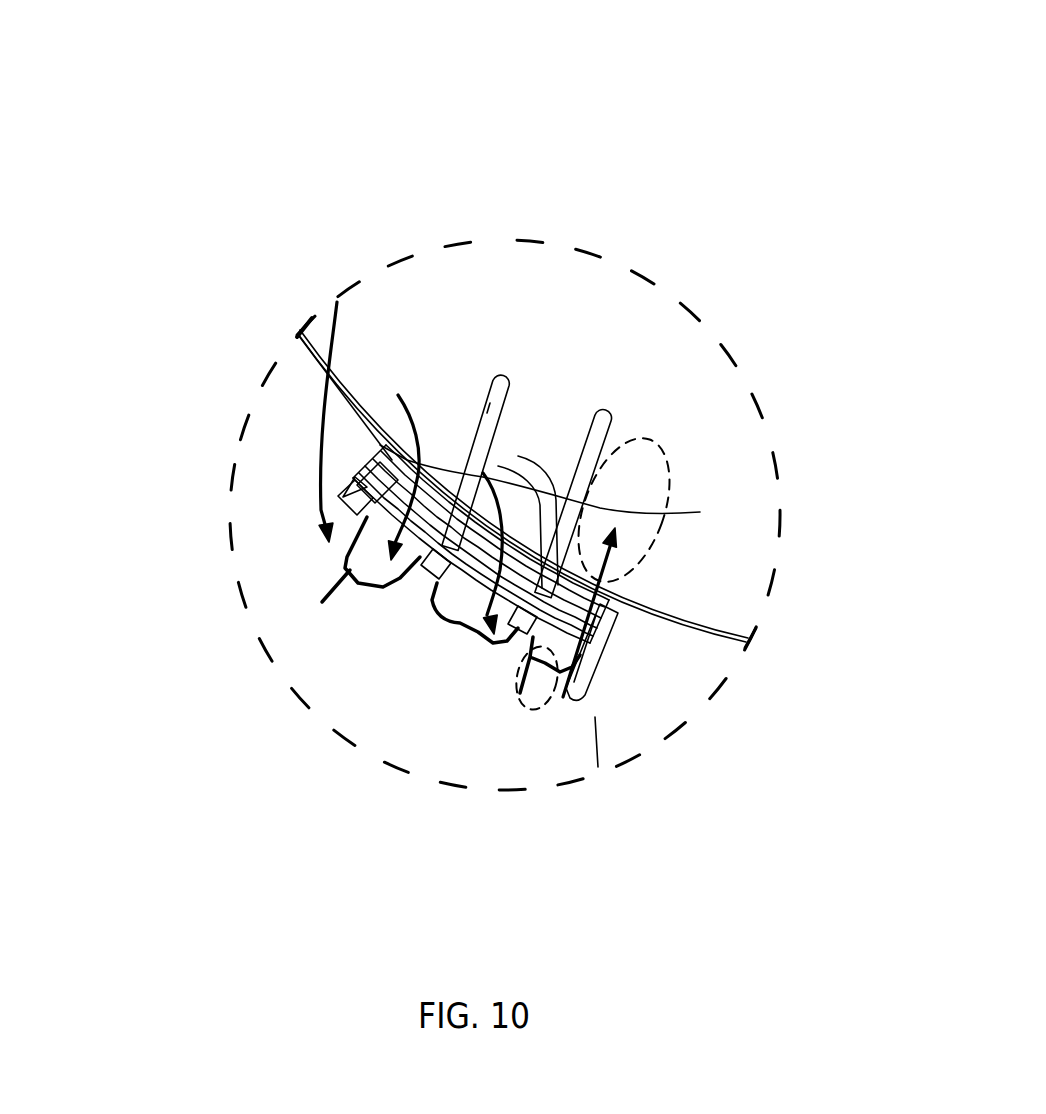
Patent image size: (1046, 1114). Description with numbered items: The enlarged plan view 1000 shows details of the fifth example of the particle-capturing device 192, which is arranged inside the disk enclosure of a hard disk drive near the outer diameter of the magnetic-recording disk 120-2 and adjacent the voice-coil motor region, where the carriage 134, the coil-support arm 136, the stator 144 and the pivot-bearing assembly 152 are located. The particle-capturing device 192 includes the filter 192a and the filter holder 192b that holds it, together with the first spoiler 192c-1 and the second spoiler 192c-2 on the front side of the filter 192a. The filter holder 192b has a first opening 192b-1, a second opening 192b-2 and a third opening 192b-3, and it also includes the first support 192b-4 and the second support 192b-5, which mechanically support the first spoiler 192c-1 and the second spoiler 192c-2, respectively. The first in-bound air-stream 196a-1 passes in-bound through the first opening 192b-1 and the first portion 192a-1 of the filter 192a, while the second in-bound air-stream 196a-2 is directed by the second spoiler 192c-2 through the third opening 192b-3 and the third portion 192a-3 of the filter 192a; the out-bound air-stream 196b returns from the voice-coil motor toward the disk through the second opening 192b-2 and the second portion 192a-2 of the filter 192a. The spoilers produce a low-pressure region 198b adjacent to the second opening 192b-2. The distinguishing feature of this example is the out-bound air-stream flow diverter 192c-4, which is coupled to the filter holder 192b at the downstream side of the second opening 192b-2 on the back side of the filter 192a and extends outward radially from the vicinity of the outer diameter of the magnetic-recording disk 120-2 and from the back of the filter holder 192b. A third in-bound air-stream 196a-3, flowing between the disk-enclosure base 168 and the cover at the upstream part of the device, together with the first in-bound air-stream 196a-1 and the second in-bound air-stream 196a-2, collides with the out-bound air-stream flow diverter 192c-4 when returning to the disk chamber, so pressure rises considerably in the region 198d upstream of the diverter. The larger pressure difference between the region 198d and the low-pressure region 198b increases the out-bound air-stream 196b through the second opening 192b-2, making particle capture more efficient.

The enlarged plan view 1000 is at (114, 84).
The disk-enclosure base 168 is at (294, 362).
The particle-capturing device 192 is at (110, 893).
The first spoiler 192c-1 is at (525, 427).
The second spoiler 192c-2 is at (600, 500).
The second support 192b-5 is at (380, 445).
The first support 192b-4 is at (480, 440).
The filter holder 192b is at (370, 498).
The filter 192a is at (393, 510).
The first portion of the filter 192a-1 is at (365, 475).
The first opening 192b-1 is at (527, 783).
The third portion of the filter 192a-3 is at (437, 583).
The third opening 192b-3 is at (446, 626).
The second portion of the filter 192a-2 is at (527, 647).
The second opening 192b-2 is at (587, 700).
The out-bound air-stream flow diverter 192c-4 is at (748, 640).
The third in-bound air-stream 196a-3 is at (337, 330).
The magnetic-recording disk 120-2 is at (623, 327).
The first in-bound air-stream 196a-1 is at (525, 427).
The low-pressure region 198b is at (672, 468).
The second in-bound air-stream 196a-2 is at (700, 512).
The out-bound air-stream 196b is at (590, 540).
The region upstream from the flow diverter 198d is at (617, 592).
The carriage 134 is at (663, 703).
The stator 144 is at (502, 772).
The coil-support arm 136 is at (558, 767).
The pivot-bearing assembly 152 is at (660, 748).